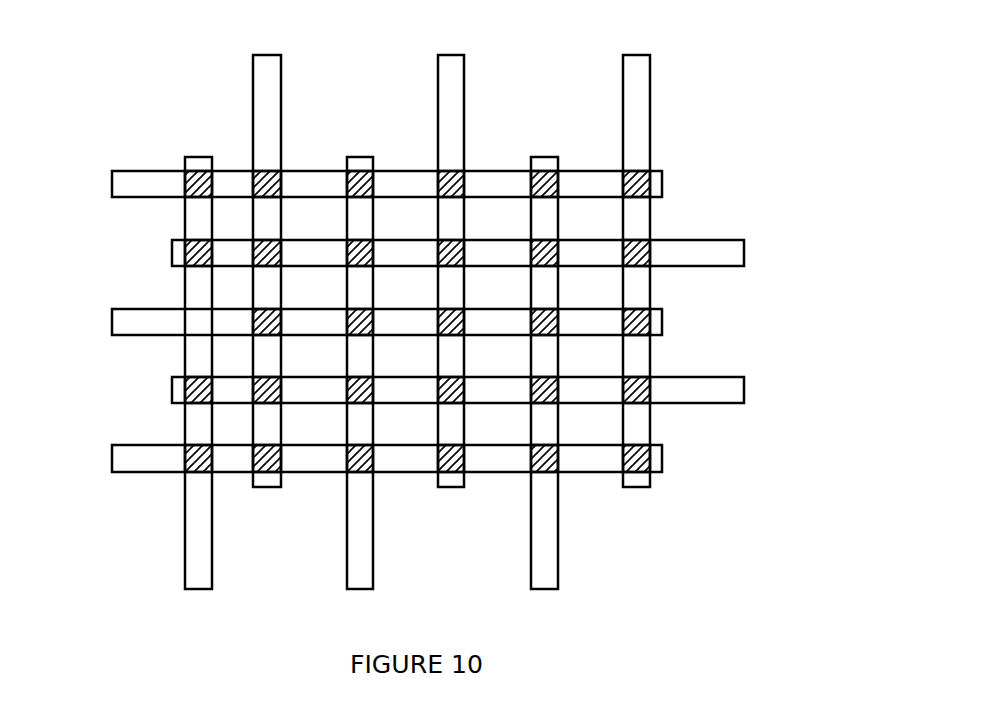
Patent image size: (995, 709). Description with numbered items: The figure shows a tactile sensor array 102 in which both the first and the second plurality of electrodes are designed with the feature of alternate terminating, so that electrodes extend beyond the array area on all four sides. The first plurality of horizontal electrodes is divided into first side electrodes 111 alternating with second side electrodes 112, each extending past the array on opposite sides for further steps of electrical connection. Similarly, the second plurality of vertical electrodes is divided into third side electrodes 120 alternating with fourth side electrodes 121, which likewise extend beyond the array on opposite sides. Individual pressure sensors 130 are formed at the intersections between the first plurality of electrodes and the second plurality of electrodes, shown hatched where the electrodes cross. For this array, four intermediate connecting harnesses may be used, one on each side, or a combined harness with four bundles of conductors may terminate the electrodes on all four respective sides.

The array 102 is at (465, 301).
The first side electrodes 111 is at (121, 188).
The second side electrodes 112 is at (725, 247).
The third side electrodes 120 is at (546, 173).
The fourth side electrodes 121 is at (640, 69).
The pressure sensors 130 is at (642, 167).